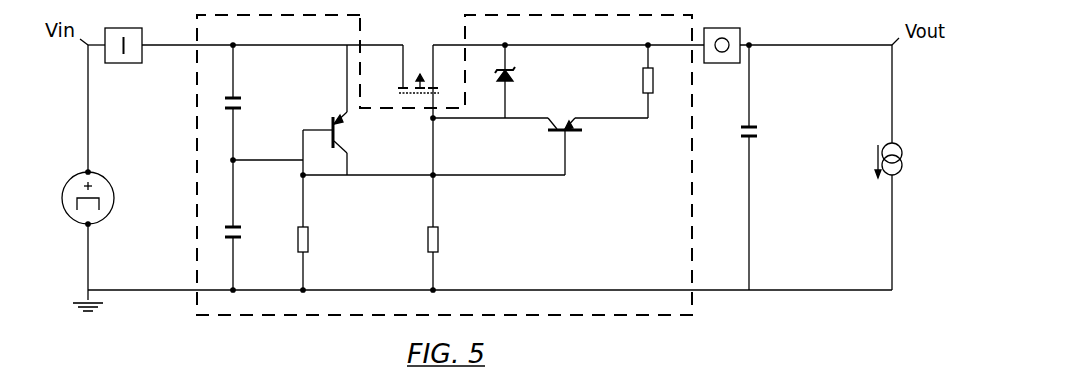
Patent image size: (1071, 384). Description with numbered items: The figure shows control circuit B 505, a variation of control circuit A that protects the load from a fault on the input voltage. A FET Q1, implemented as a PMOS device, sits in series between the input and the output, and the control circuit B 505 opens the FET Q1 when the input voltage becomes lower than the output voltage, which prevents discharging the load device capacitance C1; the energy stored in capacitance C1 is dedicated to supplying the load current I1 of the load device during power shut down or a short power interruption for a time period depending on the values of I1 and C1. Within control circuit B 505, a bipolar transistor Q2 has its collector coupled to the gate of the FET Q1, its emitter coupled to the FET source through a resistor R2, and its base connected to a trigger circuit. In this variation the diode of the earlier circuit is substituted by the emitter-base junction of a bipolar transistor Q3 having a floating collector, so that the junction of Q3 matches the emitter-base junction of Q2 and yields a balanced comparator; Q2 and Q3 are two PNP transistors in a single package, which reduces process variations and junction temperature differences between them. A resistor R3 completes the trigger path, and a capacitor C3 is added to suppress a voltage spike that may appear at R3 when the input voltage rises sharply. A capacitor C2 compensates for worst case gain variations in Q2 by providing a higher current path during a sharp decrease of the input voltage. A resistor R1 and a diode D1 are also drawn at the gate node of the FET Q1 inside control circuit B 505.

The control circuit B 505 is at (598, 258).
The load device capacitance C1 is at (733, 166).
The capacitor C2 is at (247, 101).
The capacitor C3 is at (255, 225).
The resistor R1 is at (457, 168).
The resistor R2 is at (669, 81).
The resistor R3 is at (327, 211).
The FET Q1 is at (406, 69).
The bipolar transistor Q2 is at (575, 146).
The bipolar transistor Q3 is at (339, 110).
The diode D1 is at (520, 81).
The load current I1 is at (895, 167).